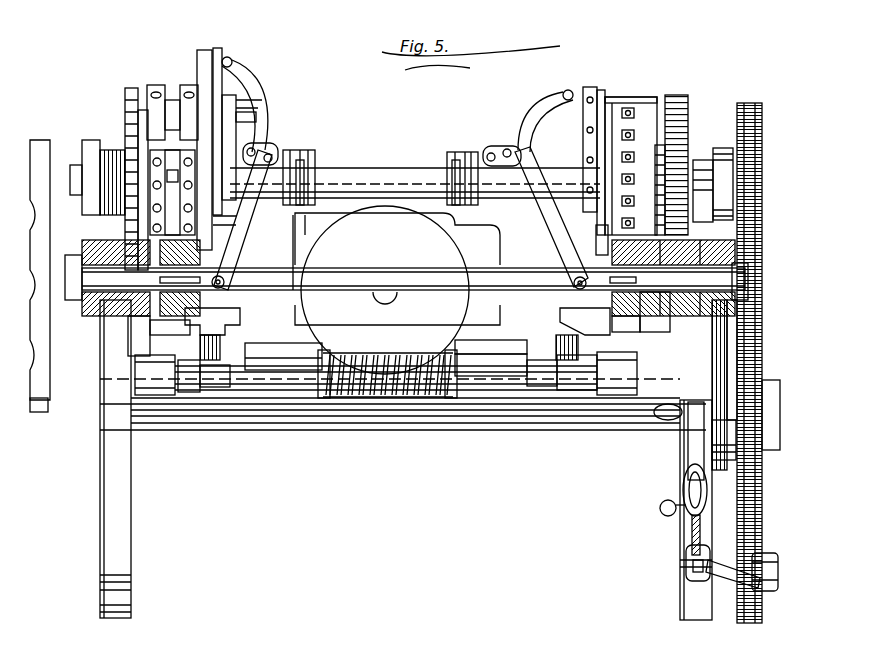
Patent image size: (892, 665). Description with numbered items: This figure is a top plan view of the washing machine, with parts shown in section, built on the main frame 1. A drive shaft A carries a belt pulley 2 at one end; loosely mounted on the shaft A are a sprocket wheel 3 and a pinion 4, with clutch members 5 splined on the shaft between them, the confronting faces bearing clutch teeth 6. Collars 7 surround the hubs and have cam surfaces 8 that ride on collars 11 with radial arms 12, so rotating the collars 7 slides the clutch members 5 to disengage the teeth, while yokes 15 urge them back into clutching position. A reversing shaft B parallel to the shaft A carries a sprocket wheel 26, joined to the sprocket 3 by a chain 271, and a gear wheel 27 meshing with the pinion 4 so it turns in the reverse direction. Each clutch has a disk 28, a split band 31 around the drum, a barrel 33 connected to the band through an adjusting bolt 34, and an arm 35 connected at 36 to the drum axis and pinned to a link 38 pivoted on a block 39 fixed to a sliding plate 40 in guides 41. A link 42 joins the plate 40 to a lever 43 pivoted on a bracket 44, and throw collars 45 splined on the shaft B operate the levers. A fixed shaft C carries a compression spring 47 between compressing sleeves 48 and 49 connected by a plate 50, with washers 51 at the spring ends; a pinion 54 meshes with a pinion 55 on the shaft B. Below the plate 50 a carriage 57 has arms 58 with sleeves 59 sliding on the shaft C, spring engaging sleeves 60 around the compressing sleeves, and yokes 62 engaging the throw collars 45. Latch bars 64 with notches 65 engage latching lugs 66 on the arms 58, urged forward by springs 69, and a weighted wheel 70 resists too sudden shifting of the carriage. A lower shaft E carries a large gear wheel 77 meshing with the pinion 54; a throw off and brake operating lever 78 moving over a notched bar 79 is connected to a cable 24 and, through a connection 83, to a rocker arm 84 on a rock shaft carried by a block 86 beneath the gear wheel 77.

The main frame 1 is at (118, 525).
The belt pulley 2 is at (40, 412).
The sprocket wheel 3 is at (128, 318).
The pinion 4 is at (740, 238).
The clutch member 5 is at (145, 340).
The clutch teeth 6 is at (100, 250).
The collar 7 is at (140, 245).
The cam surface 8 is at (740, 208).
The collar 11 is at (238, 222).
The radial arm 12 is at (172, 192).
The yoke 15 is at (232, 332).
The cable 24 is at (736, 455).
The sprocket wheel 26 is at (140, 90).
The gear wheel 27 is at (690, 149).
The disk 28 is at (240, 88).
The split band 31 is at (660, 150).
The barrel 33 is at (130, 118).
The adjusting bolt 34 is at (190, 95).
The arm 35 is at (262, 112).
The arm connection 36 is at (235, 148).
The link 38 is at (548, 230).
The block 39 is at (258, 116).
The plate 40 is at (215, 62).
The guide 41 is at (232, 64).
The link 42 is at (248, 100).
The lever 43 is at (226, 236).
The bracket 44 is at (224, 260).
The throw collar 45 is at (312, 160).
The compression spring 47 is at (368, 398).
The compressing sleeve 48 is at (272, 350).
The compressing sleeve 49 is at (488, 365).
The plate 50 is at (491, 332).
The washer 51 is at (322, 400).
The pinion 54 is at (752, 318).
The pinion 55 is at (755, 152).
The carriage 57 is at (475, 258).
The arm 58 is at (222, 398).
The sleeve 59 is at (386, 373).
The spring engaging sleeve 60 is at (268, 398).
The yoke 62 is at (304, 188).
The latch bar 64 is at (190, 318).
The notch 65 is at (226, 290).
The latching lug 66 is at (185, 398).
The spring 69 is at (178, 325).
The wheel 70 is at (385, 290).
The gear wheel 77 is at (762, 515).
The throw off and brake operating lever 78 is at (688, 490).
The notched bar 79 is at (688, 440).
The pivotal connection 83 is at (688, 568).
The rocker arm 84 is at (730, 585).
The block 86 is at (760, 570).
The chain 271 is at (140, 118).
The shaft A is at (362, 280).
The shaft B is at (385, 172).
The shaft C is at (565, 398).
The shaft E is at (462, 398).